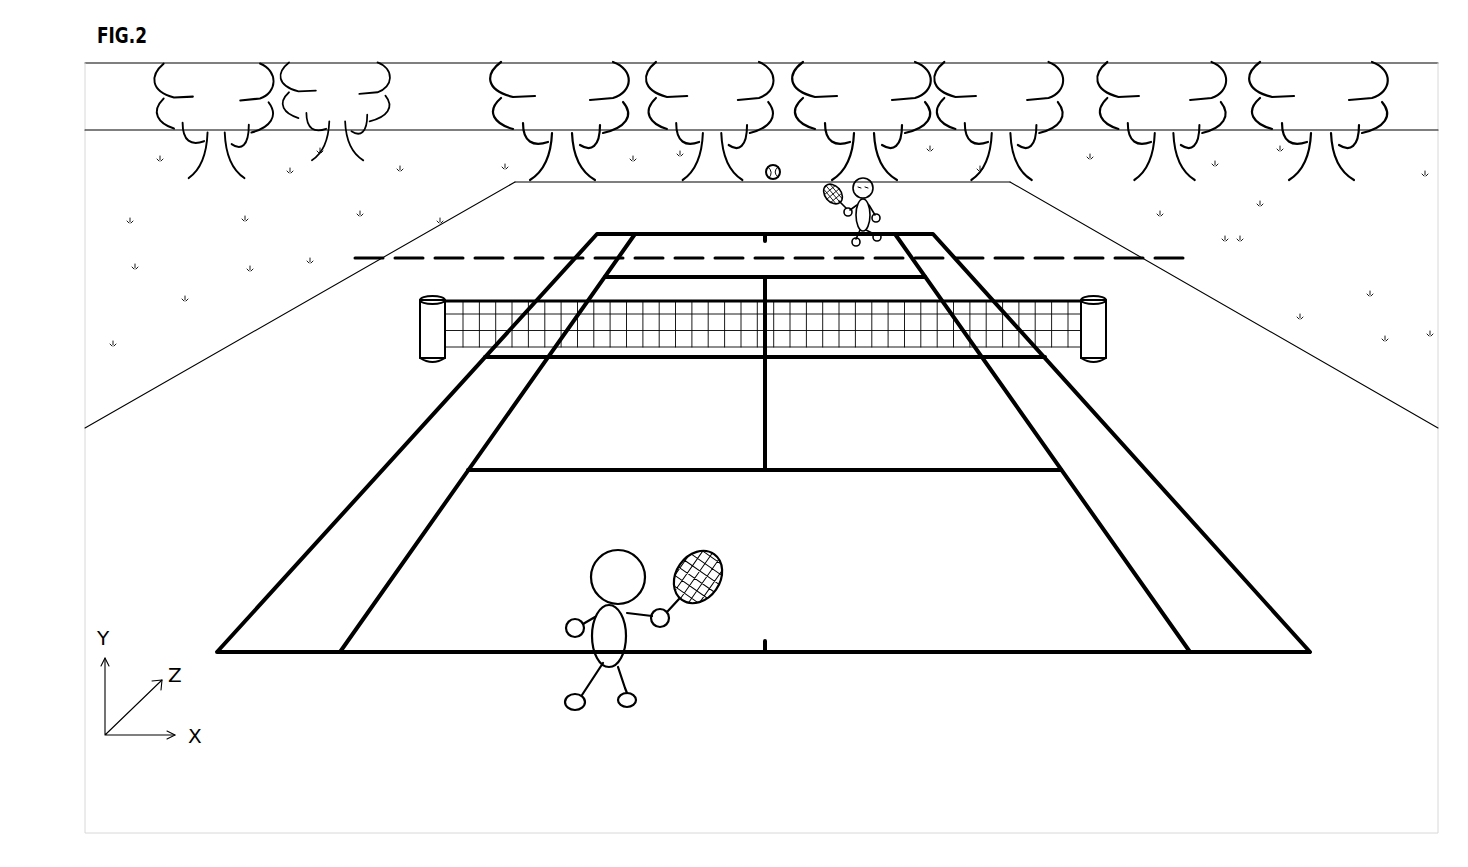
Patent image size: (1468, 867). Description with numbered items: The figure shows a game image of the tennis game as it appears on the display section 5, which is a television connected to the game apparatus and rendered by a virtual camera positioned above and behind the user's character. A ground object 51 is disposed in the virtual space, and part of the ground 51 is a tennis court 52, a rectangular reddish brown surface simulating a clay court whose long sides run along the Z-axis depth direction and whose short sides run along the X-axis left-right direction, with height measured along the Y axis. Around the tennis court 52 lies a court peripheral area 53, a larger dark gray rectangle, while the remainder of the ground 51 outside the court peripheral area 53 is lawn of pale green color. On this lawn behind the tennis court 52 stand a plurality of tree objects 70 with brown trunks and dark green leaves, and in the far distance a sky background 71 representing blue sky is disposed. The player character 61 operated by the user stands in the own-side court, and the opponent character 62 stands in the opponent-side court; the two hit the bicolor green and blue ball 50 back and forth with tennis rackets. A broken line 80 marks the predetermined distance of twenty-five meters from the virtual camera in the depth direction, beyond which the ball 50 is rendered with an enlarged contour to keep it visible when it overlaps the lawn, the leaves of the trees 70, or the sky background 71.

The display section 5 is at (1405, 67).
The sky background 71 is at (455, 110).
The tree objects 70 is at (865, 72).
The ground object 51 is at (1250, 292).
The court peripheral area 53 is at (1187, 423).
The tennis court 52 is at (1180, 530).
The broken line 80 is at (985, 257).
The ball object 50 is at (782, 168).
The player character 61 is at (648, 560).
The opponent character 62 is at (878, 205).